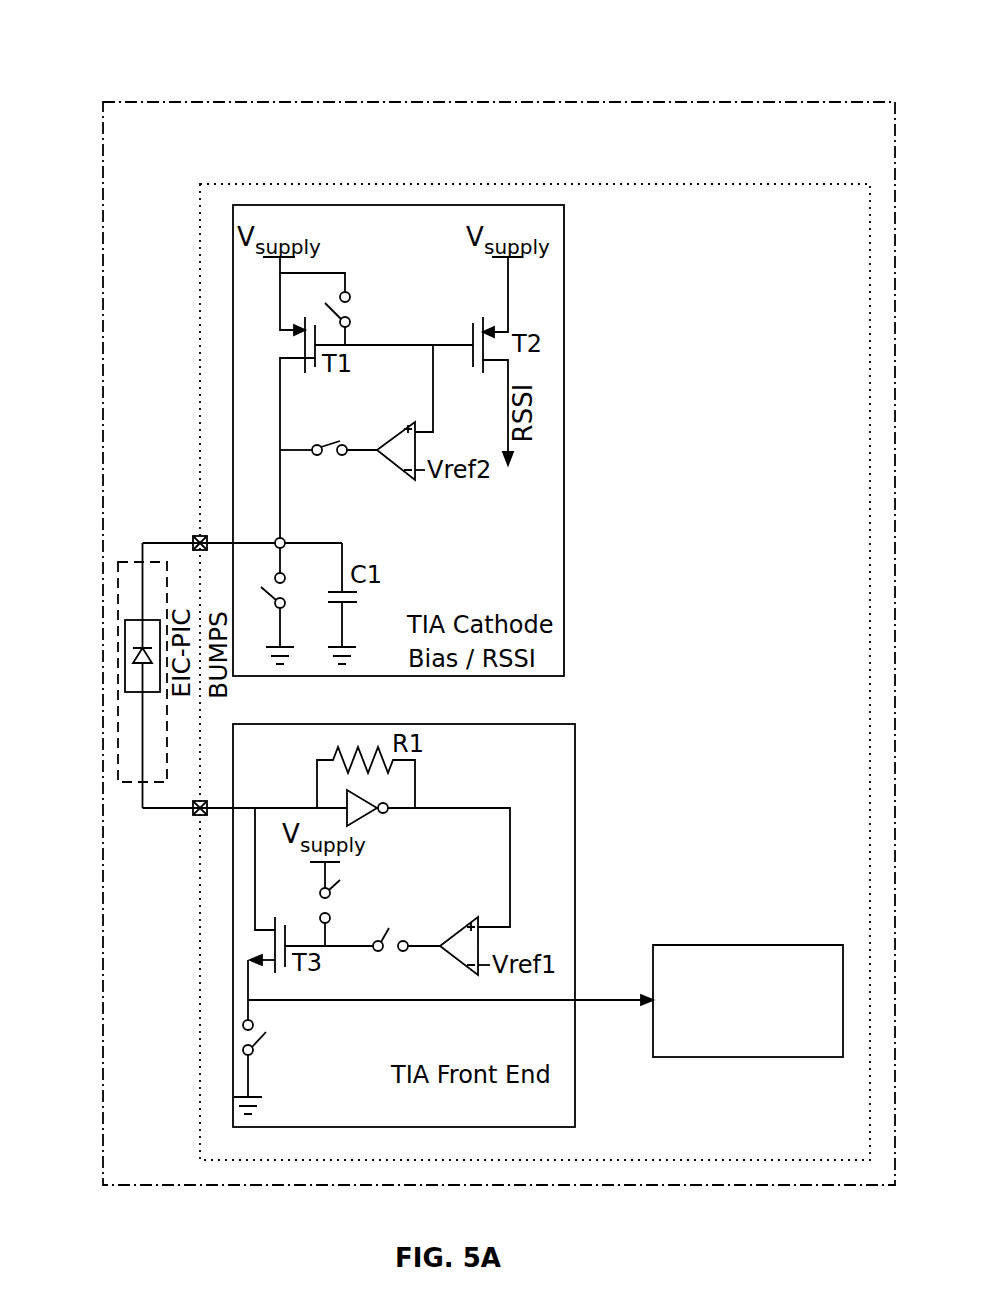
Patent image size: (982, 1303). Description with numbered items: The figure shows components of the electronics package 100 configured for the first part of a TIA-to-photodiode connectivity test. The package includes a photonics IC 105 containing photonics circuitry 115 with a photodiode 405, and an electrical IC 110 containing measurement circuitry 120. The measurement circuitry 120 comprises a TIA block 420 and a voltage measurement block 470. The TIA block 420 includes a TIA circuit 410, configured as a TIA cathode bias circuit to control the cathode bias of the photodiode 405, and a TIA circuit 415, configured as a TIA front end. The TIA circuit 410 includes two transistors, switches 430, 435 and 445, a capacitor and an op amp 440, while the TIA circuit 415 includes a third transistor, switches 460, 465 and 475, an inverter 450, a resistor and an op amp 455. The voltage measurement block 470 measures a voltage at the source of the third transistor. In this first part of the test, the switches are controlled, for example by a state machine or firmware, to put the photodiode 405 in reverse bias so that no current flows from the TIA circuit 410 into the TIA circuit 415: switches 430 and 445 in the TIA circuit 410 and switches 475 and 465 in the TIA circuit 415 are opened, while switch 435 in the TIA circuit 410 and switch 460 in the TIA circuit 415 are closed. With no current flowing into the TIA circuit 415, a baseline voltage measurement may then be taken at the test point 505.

The electronics package 100 is at (130, 30).
The IC 105 is at (848, 172).
The IC 110 is at (862, 262).
The photonics circuitry 115 is at (120, 562).
The measurement circuitry 120 is at (735, 1065).
The photodiode 405 is at (128, 692).
The TIA circuit 410 is at (564, 320).
The TIA circuit 415 is at (503, 724).
The TIA block 420 is at (650, 528).
The switch 430 is at (349, 294).
The switch 435 is at (318, 445).
The op amp 440 is at (398, 468).
The switch 445 is at (275, 595).
The inverter 450 is at (366, 822).
The op amp 455 is at (458, 962).
The switch 460 is at (329, 889).
The switch 465 is at (253, 1028).
The voltage measurement block 470 is at (725, 945).
The switch 475 is at (389, 928).
The test point 505 is at (255, 843).